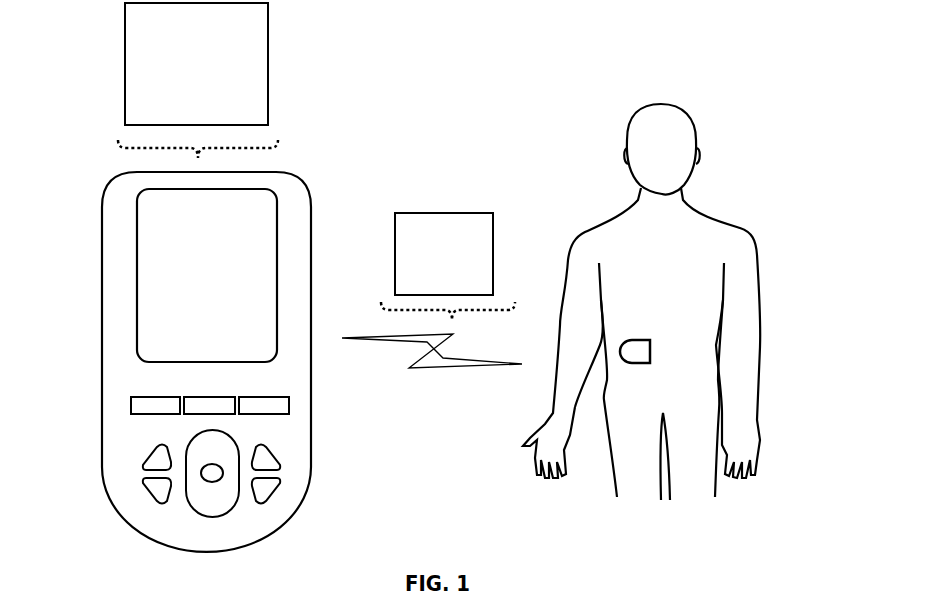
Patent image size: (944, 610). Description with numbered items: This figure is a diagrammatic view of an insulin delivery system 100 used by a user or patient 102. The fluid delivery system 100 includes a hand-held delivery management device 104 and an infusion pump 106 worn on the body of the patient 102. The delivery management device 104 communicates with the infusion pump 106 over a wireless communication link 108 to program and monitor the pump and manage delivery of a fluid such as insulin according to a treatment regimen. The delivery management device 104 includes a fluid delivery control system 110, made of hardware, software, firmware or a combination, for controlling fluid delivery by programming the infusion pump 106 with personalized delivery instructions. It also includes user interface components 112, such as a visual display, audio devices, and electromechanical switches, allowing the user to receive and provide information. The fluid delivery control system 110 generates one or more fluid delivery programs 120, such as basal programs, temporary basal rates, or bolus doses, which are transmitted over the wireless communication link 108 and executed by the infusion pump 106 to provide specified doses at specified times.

The insulin delivery system 100 is at (419, 88).
The patient 102 is at (753, 245).
The hand-held delivery management device 104 is at (283, 525).
The infusion pump 106 is at (634, 365).
The wireless communication link 108 is at (452, 368).
The fluid delivery control system 110 is at (125, 55).
The user interface components 112 is at (96, 190).
The fluid delivery program 120 is at (395, 258).